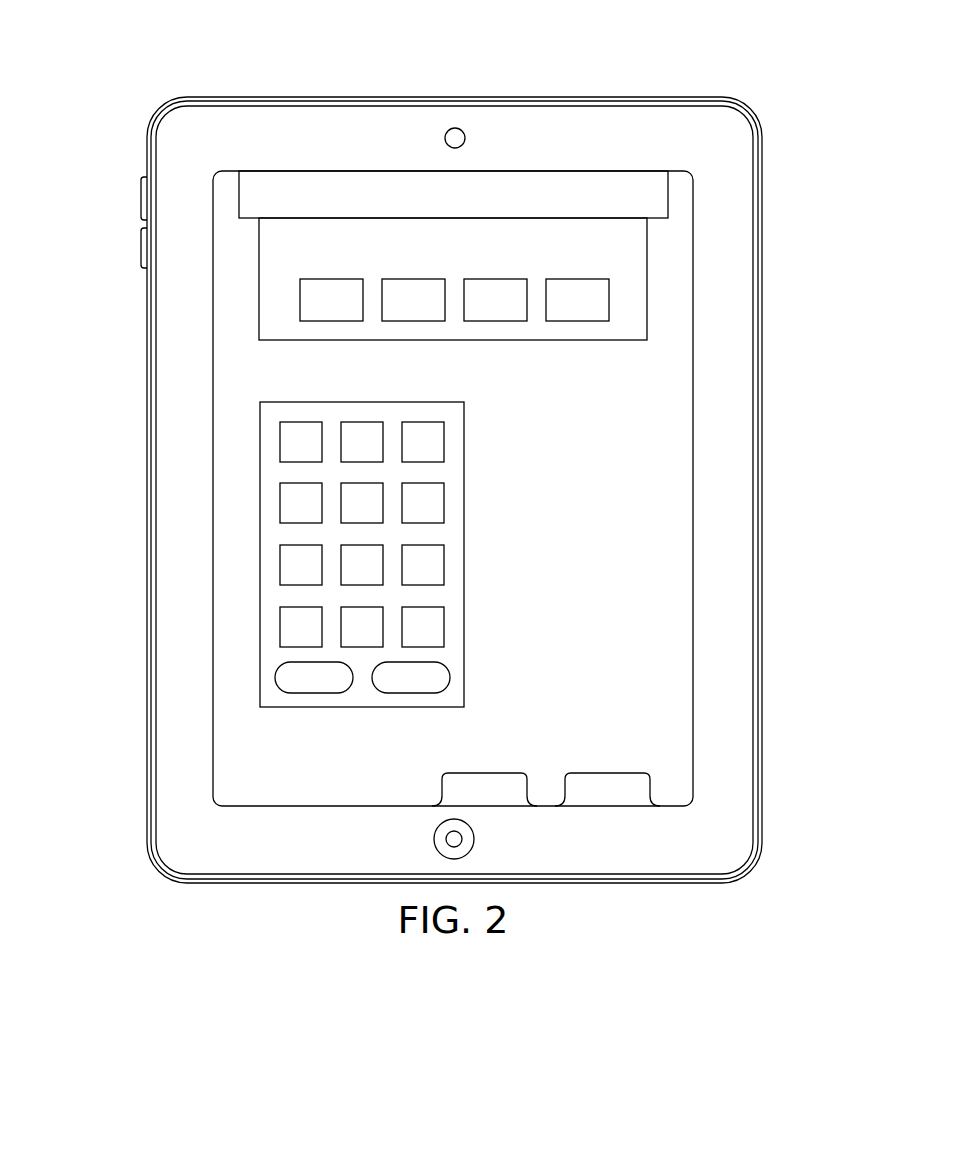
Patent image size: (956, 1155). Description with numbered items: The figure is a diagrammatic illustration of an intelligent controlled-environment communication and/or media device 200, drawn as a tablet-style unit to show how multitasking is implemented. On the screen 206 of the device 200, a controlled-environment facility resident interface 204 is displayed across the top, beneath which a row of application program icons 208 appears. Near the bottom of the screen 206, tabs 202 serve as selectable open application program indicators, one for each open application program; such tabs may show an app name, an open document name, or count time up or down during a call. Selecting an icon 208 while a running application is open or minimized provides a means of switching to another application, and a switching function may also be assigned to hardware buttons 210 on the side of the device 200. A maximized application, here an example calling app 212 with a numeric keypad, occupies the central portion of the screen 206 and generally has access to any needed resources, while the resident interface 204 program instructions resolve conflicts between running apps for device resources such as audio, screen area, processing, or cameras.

The intelligent controlled-environment communication and/or media device 200 is at (631, 61).
The tab 202 is at (593, 749).
The controlled-environment facility resident interface 204 is at (663, 305).
The screen 206 is at (352, 797).
The application program icon 208 is at (332, 278).
The hardware button 210 is at (120, 204).
The calling app 212 is at (472, 487).